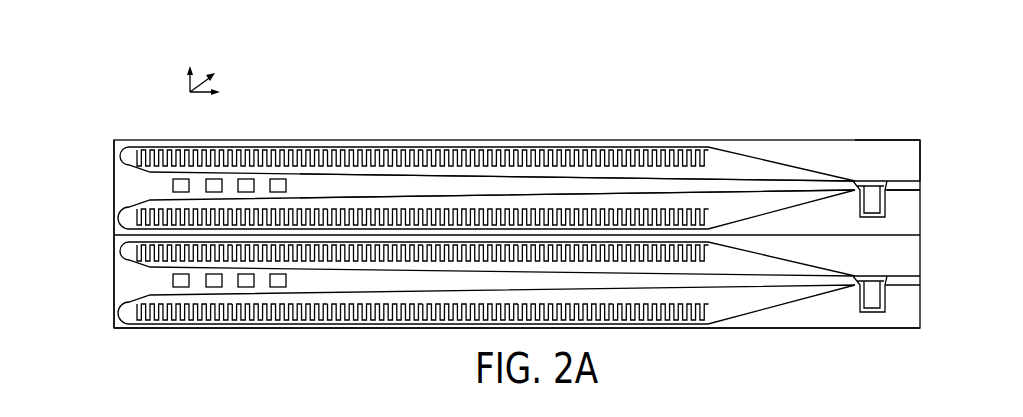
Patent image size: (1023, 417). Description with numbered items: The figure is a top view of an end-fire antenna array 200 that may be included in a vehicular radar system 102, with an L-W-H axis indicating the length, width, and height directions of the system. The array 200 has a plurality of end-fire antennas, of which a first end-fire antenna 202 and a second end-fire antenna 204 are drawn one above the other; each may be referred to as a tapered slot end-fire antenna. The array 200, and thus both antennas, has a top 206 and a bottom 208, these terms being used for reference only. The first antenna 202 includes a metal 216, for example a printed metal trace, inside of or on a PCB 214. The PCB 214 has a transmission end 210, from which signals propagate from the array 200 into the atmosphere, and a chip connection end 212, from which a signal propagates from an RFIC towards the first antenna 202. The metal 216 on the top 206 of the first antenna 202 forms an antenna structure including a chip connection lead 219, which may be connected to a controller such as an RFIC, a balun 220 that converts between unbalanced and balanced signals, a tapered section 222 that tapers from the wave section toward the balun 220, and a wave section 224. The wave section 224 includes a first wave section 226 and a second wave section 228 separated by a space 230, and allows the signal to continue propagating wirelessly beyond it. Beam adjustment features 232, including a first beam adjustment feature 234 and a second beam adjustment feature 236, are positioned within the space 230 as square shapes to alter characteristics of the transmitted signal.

The vehicular radar system 102 is at (363, 95).
The end-fire antenna array 200 is at (457, 79).
The first end-fire antenna 202 is at (921, 215).
The second end-fire antenna 204 is at (915, 305).
The top 206 is at (768, 146).
The bottom 208 is at (245, 416).
The transmission end 210 is at (114, 222).
The chip connection end 212 is at (921, 160).
The PCB 214 is at (897, 145).
The metal 216 is at (915, 185).
The chip connection lead 219 is at (910, 192).
The balun 220 is at (858, 193).
The tapered section 222 is at (718, 150).
The wave section 224 is at (502, 150).
The first wave section 226 is at (470, 147).
The second wave section 228 is at (460, 205).
The space 230 is at (410, 183).
The beam adjustment feature 232 is at (172, 189).
The first beam adjustment feature 234 is at (180, 179).
The second beam adjustment feature 236 is at (213, 179).